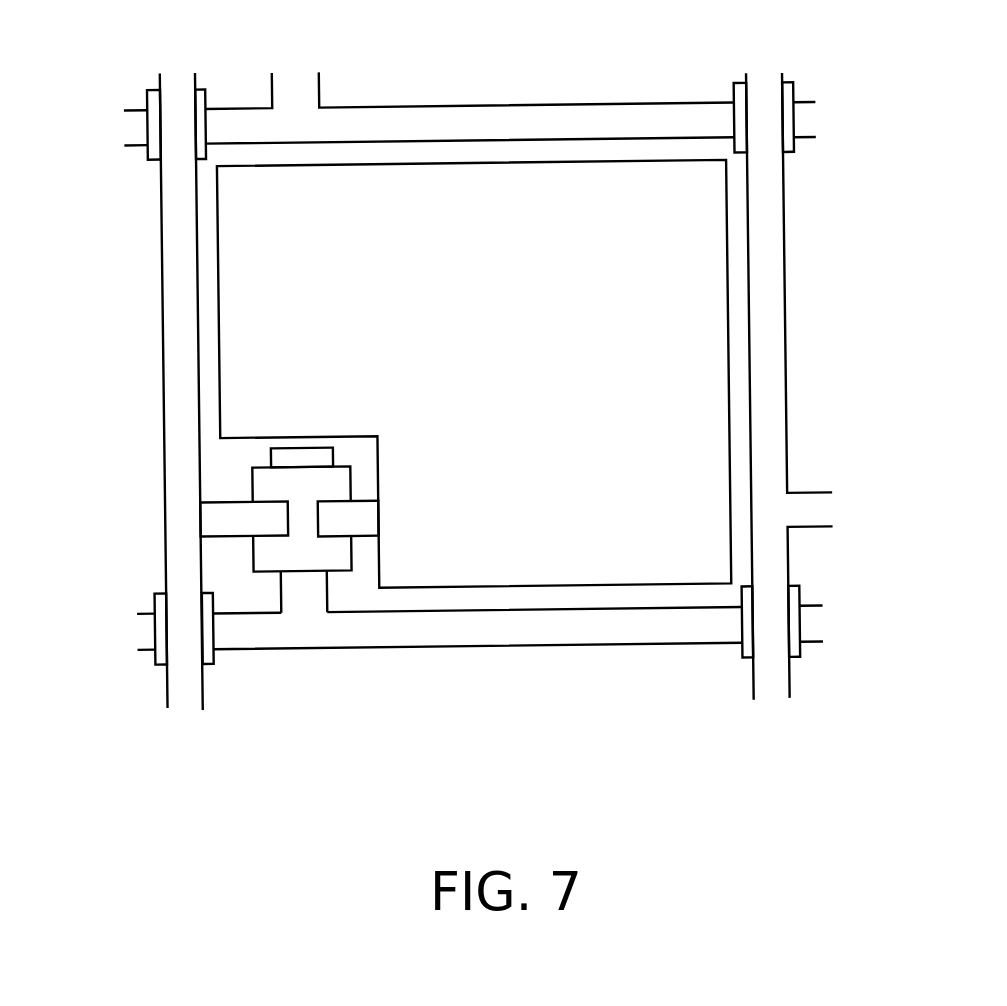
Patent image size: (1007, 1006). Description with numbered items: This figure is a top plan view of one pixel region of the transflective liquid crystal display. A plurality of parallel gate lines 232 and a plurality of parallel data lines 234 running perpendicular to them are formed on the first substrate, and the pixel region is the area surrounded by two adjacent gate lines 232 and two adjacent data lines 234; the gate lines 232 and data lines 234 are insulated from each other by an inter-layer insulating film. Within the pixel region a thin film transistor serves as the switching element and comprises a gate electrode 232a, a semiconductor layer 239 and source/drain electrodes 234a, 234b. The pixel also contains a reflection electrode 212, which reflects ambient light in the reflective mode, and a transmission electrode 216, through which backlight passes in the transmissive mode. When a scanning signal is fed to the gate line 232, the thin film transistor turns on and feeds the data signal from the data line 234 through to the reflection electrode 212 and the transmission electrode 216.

The reflection electrode 212 is at (474, 295).
The transmission electrode 216 is at (337, 210).
The gate line 232 is at (645, 630).
The gate electrode 232a is at (312, 597).
The data line 234 is at (177, 684).
The source electrode 234a is at (235, 520).
The drain electrode 234b is at (370, 519).
The semiconductor layer 239 is at (267, 487).